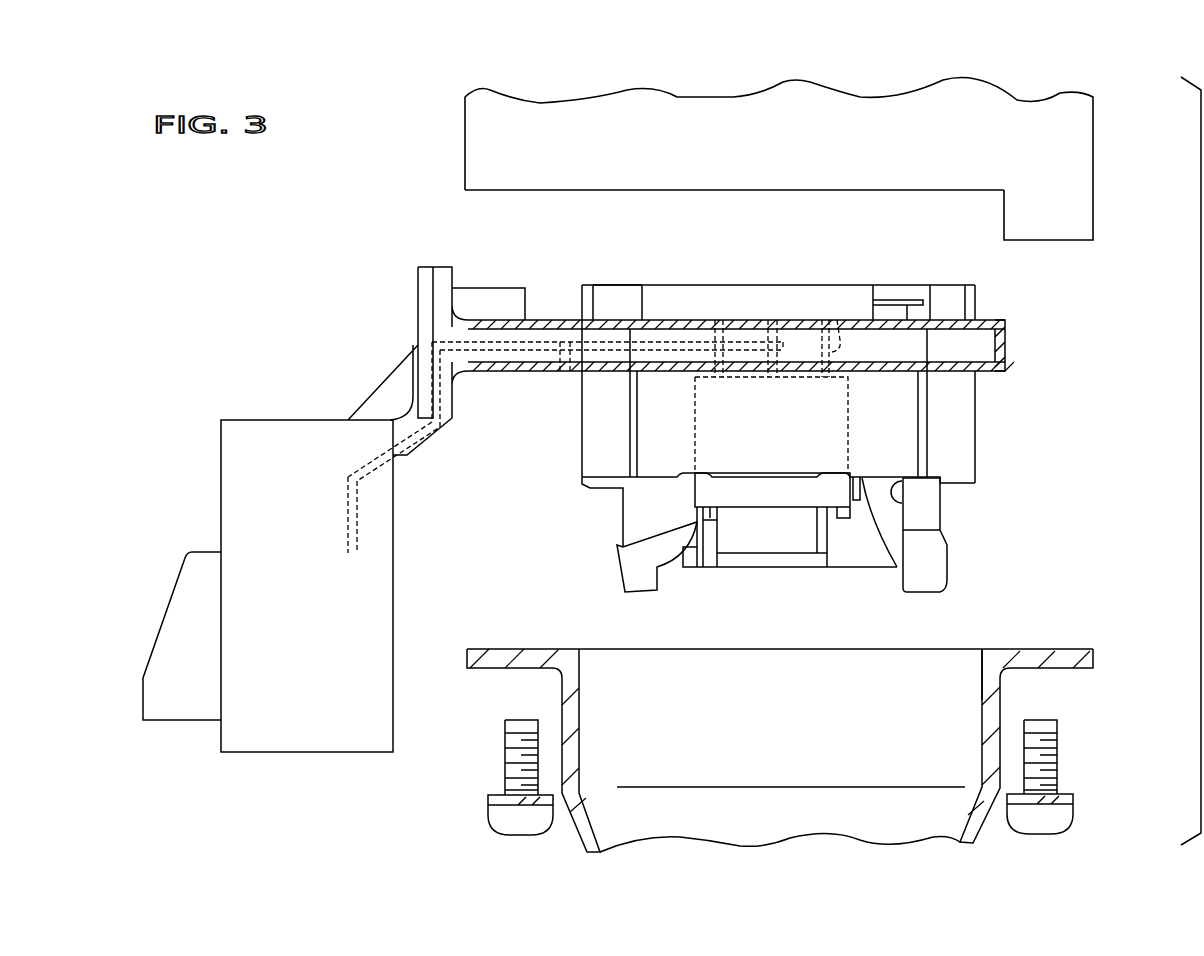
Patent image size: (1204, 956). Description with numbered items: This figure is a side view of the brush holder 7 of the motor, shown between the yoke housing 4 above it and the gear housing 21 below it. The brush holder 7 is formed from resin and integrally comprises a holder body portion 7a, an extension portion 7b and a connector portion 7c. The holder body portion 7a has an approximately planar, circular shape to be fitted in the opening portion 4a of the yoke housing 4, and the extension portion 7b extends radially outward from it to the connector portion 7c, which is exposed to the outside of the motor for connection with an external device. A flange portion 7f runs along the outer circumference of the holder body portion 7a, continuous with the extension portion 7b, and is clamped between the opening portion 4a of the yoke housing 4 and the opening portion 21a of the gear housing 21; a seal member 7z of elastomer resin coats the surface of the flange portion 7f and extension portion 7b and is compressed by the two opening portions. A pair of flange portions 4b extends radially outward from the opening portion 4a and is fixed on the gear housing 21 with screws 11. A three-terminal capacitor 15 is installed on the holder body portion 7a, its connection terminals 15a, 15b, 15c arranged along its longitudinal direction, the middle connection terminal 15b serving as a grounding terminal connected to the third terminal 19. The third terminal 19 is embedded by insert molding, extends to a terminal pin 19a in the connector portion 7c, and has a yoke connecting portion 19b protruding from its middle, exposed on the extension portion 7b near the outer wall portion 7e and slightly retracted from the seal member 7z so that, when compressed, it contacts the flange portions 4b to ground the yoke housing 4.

The gear housing 21 is at (1094, 138).
The opening portion of the gear housing 21a is at (948, 192).
The brush holder 7 is at (1064, 333).
The holder body portion 7a is at (975, 483).
The extension portion 7b is at (487, 373).
The connector portion 7c is at (221, 484).
The outer wall portion 7e is at (590, 458).
The flange portion 7f is at (992, 320).
The seal member 7z is at (1005, 367).
The capacitor 15 is at (770, 507).
The connection terminal 15a is at (732, 318).
The middle connection terminal 15b is at (787, 318).
The connection terminal 15c is at (837, 318).
The third terminal 19 is at (532, 318).
The terminal pin 19a is at (350, 553).
The yoke connecting portion 19b is at (565, 372).
The yoke housing 4 is at (1003, 688).
The opening portion of the yoke housing 4a is at (982, 697).
The flange portions 4b is at (482, 668).
The screws 11 is at (488, 814).